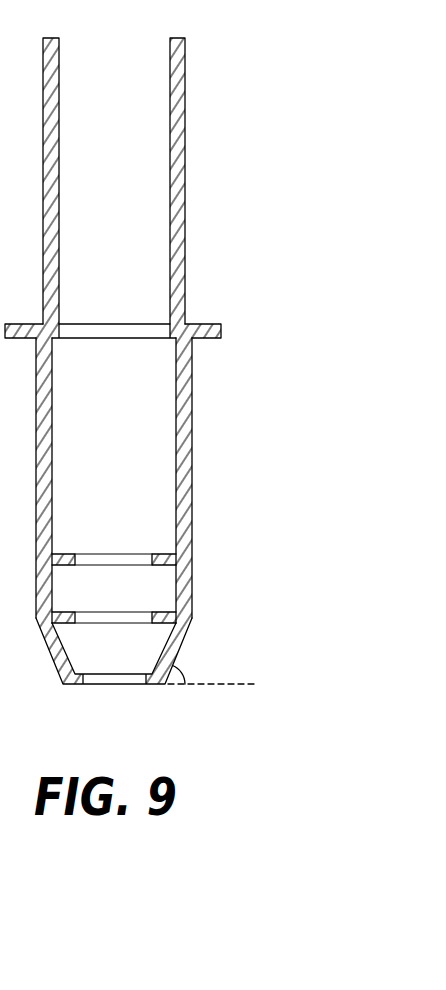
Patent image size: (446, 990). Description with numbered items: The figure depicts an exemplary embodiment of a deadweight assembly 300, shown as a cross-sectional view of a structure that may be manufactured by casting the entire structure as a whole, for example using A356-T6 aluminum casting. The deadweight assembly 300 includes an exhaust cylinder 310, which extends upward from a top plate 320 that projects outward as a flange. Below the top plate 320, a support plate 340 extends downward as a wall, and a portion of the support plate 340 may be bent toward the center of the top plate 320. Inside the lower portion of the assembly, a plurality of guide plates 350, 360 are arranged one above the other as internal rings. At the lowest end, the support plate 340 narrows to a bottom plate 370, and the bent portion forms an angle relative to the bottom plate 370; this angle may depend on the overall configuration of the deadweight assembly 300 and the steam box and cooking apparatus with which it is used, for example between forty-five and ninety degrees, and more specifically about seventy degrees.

The deadweight assembly 300 is at (143, 395).
The exhaust cylinder 310 is at (185, 244).
The top plate 320 is at (221, 324).
The support plate 340 is at (192, 422).
The guide plate 350 is at (163, 557).
The guide plate 360 is at (163, 613).
The bottom plate 370 is at (162, 685).